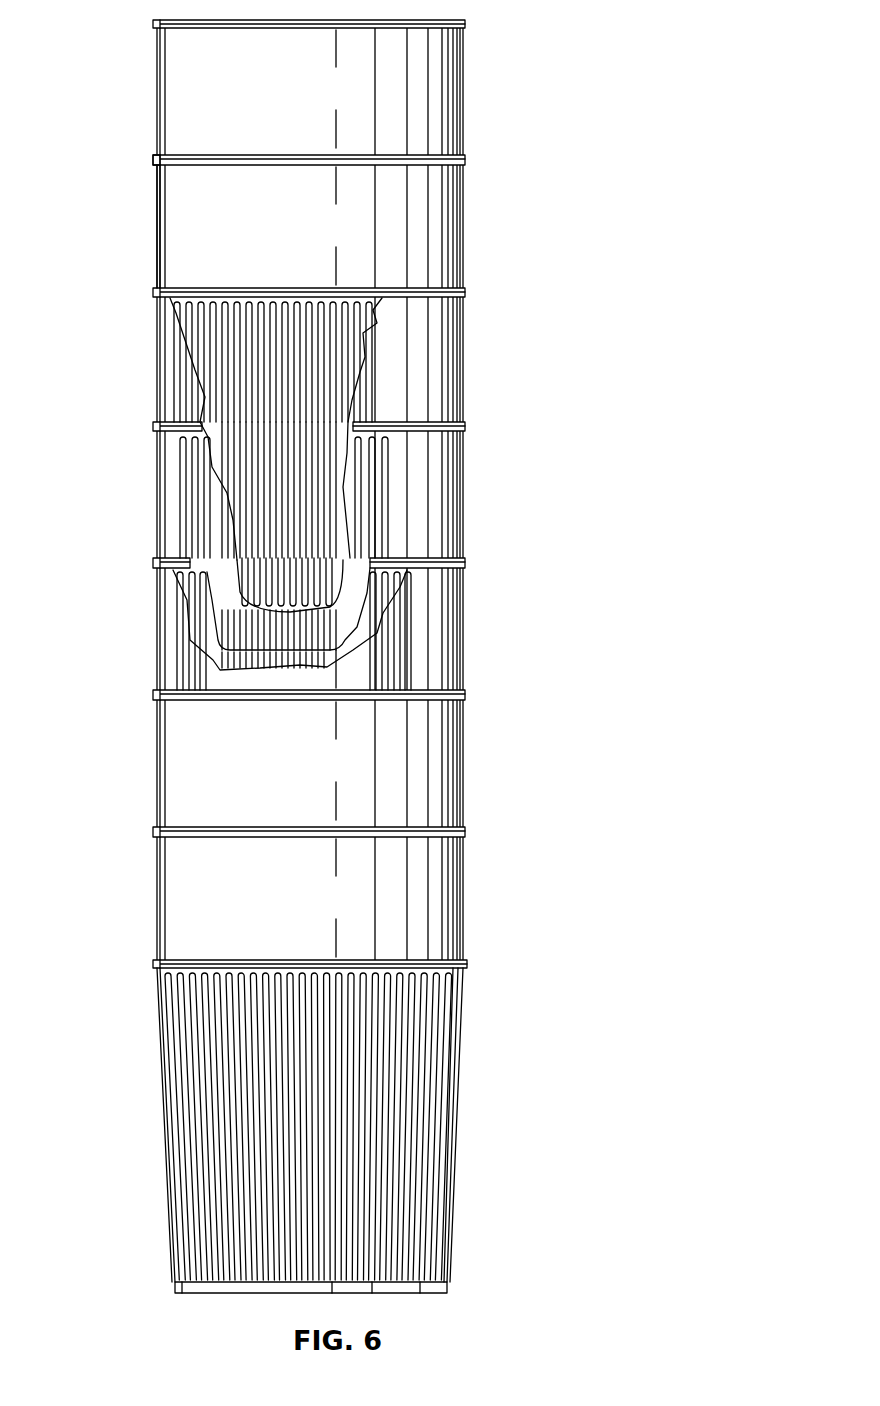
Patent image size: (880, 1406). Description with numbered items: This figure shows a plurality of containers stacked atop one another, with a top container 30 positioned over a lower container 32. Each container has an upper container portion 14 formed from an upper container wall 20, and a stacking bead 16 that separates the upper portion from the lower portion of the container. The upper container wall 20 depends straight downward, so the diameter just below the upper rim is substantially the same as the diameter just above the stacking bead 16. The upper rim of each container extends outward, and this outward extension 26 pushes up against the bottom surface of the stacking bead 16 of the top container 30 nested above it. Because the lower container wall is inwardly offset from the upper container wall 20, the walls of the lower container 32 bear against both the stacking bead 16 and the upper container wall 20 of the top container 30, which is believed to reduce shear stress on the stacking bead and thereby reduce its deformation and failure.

The upper container portion 14 is at (155, 170).
The stacking bead 16 is at (155, 157).
The upper container wall 20 is at (157, 192).
The outward extension 26 is at (155, 163).
The top container 30 is at (435, 80).
The lower container 32 is at (422, 210).